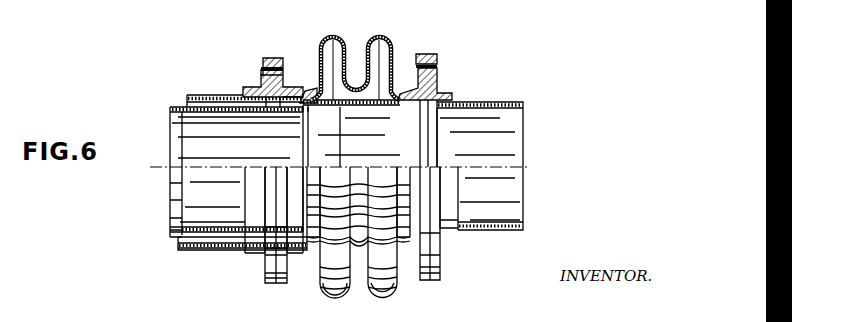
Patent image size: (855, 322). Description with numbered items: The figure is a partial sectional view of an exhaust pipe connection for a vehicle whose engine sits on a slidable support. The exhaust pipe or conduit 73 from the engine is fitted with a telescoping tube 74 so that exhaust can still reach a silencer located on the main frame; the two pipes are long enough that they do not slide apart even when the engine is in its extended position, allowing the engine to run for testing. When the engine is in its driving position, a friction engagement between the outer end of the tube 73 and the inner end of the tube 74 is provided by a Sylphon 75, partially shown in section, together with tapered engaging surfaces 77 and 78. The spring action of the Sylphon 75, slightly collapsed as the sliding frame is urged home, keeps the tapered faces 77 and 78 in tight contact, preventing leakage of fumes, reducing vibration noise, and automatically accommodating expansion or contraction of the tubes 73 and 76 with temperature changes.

The exhaust pipe 73 is at (172, 106).
The telescoping tube 74 is at (218, 95).
The Sylphon 75 is at (346, 40).
The tube 76 is at (497, 103).
The tapered engaging surface 77 is at (301, 111).
The tapered engaging surface 78 is at (312, 88).